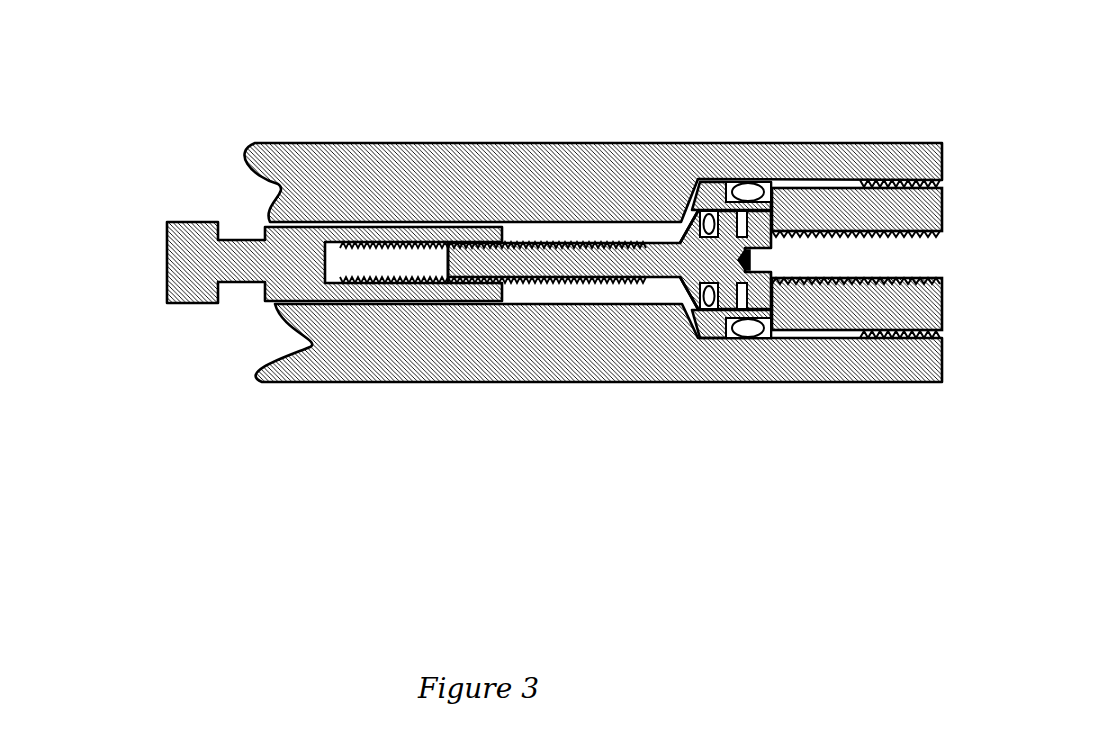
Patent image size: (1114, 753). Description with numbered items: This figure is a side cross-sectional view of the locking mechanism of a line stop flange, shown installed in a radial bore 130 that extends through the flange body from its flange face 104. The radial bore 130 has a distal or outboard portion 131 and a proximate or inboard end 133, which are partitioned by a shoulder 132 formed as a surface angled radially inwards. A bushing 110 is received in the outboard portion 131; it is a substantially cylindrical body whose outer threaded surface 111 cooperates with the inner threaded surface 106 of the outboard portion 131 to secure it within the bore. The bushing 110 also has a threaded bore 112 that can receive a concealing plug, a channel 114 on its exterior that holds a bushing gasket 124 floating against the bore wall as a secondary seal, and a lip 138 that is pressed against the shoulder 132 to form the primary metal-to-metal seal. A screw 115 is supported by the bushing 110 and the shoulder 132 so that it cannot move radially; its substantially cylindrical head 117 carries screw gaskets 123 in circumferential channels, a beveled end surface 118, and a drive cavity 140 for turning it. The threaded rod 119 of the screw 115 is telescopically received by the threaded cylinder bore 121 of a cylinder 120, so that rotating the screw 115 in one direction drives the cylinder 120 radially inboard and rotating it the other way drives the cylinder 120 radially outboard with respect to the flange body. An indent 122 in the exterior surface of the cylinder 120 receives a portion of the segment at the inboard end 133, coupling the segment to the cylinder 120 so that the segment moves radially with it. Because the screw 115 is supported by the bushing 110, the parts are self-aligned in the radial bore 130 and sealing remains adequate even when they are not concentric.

The flange face 104 is at (573, 143).
The inner threaded surface 106 is at (942, 340).
The bushing 110 is at (942, 210).
The outer threaded surface 111 is at (942, 333).
The threaded bore 112 is at (870, 235).
The channel 114 is at (771, 185).
The screw 115 is at (518, 283).
The head 117 is at (725, 180).
The beveled end surface 118 is at (688, 292).
The threaded rod 119 is at (535, 243).
The cylinder 120 is at (167, 268).
The threaded cylinder bore 121 is at (416, 284).
The indent 122 is at (246, 238).
The screw gasket 123 is at (705, 340).
The bushing gasket 124 is at (748, 339).
The radial bore 130 is at (572, 225).
The outboard portion 131 is at (942, 381).
The shoulder 132 is at (697, 192).
The inboard end 133 is at (260, 378).
The lip 138 is at (697, 340).
The drive cavity 140 is at (771, 262).